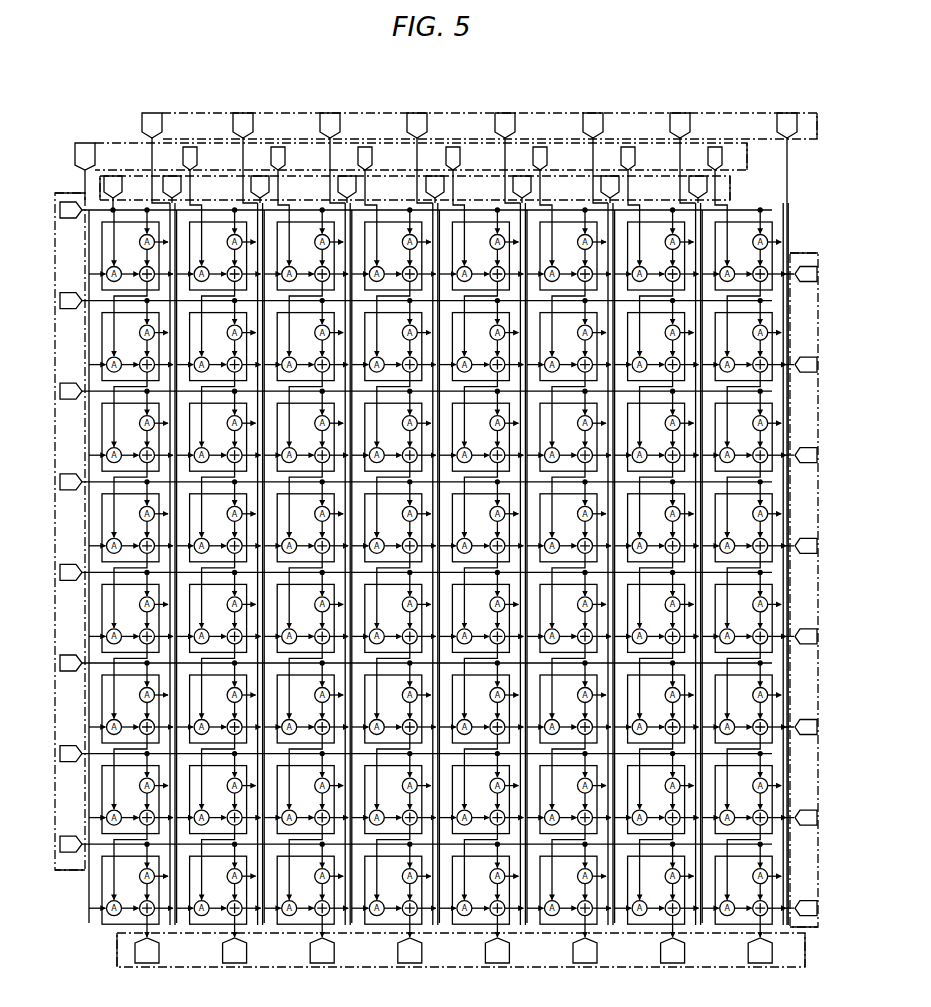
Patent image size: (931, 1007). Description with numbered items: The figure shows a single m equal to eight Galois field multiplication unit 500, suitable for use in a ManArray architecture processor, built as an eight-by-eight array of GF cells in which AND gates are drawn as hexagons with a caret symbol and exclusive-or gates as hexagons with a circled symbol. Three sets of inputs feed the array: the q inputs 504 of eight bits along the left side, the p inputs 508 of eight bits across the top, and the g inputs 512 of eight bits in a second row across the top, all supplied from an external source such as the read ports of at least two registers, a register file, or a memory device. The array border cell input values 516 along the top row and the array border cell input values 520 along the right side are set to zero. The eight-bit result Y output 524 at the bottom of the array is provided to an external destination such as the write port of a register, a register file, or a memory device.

The GF multiplication unit 500 is at (716, 90).
The q inputs 504 is at (68, 870).
The p inputs 508 is at (462, 113).
The g inputs 512 is at (104, 142).
The Y(i-1)m-1 array border cell input values 516 is at (733, 190).
The Y(i-1)j-1 array border cell input values 520 is at (800, 253).
The result Y output 524 is at (440, 967).